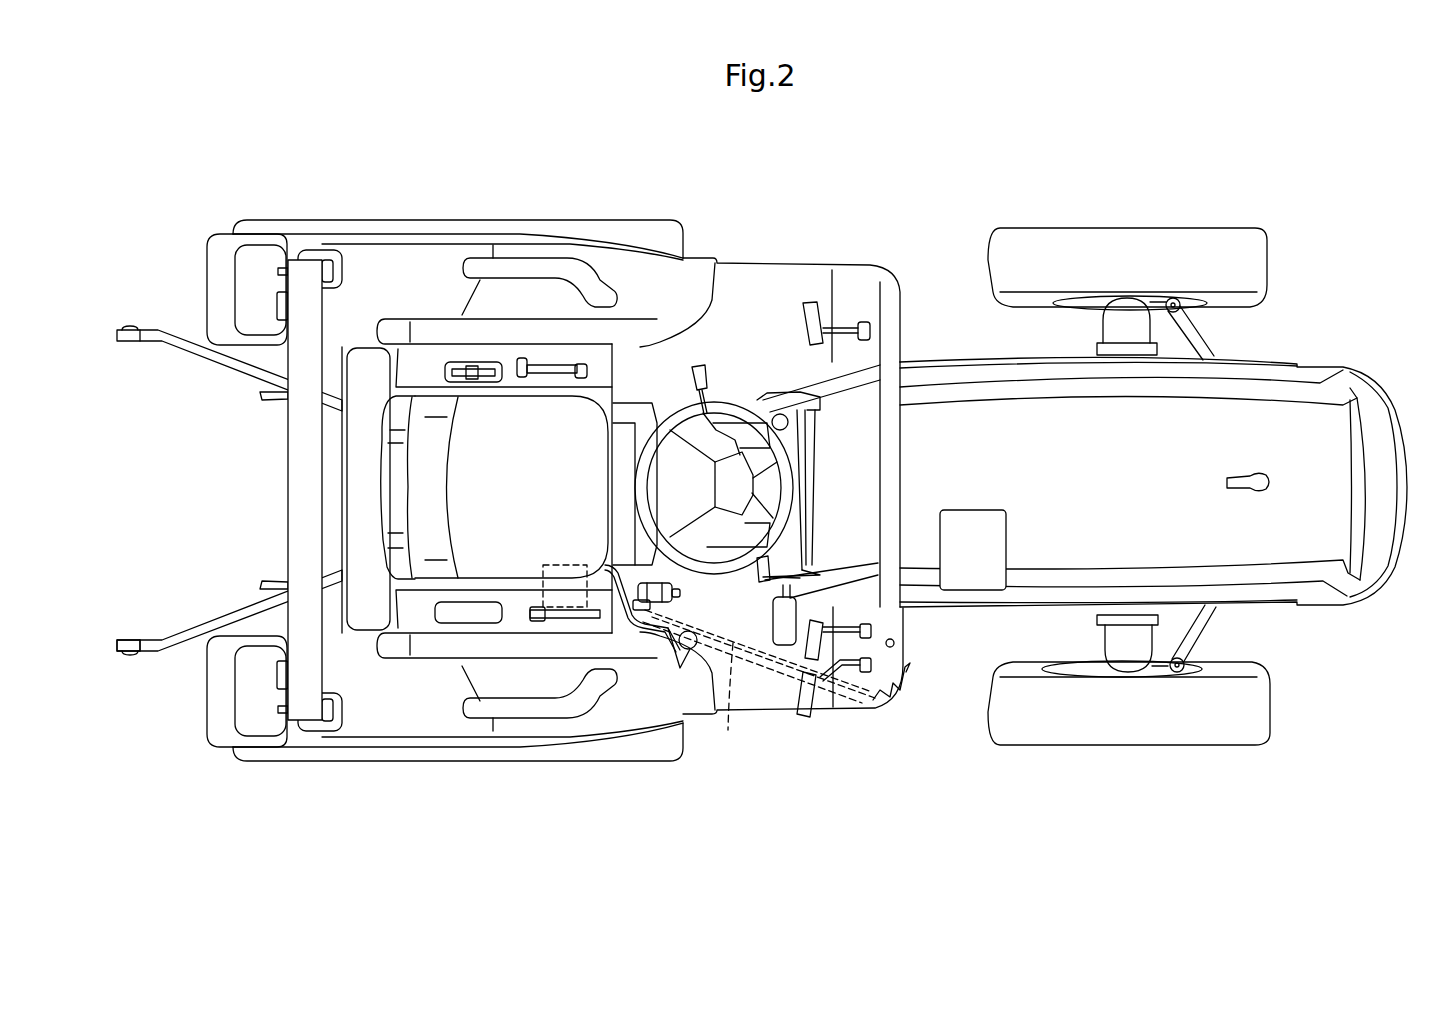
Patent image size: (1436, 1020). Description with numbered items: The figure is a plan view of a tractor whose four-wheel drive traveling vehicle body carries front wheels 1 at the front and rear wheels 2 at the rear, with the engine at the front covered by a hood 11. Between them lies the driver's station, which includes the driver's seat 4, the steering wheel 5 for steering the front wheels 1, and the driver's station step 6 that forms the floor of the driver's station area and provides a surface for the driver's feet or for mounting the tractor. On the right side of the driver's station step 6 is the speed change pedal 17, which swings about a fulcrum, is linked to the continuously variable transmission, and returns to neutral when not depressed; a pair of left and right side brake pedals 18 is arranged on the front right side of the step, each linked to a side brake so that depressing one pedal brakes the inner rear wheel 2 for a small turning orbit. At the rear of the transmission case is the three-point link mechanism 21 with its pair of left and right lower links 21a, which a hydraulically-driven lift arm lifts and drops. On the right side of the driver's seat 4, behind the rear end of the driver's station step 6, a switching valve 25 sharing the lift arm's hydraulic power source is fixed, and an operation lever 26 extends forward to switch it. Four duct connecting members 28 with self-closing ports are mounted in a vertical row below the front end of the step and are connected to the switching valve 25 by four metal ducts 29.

The front wheels 1 is at (1121, 228).
The rear wheels 2 is at (612, 232).
The driver's seat 4 is at (577, 415).
The steering wheel 5 is at (738, 405).
The driver's station step 6 is at (760, 264).
The hood 11 is at (1257, 368).
The speed change pedal 17 is at (777, 618).
The side brake pedals 18 is at (803, 692).
The three-point link mechanism 21 is at (147, 662).
The lower links 21a is at (211, 365).
The switching valve 25 is at (562, 563).
The operation lever 26 is at (673, 650).
The duct connecting members 28 is at (907, 667).
The metal ducts 29 is at (727, 701).